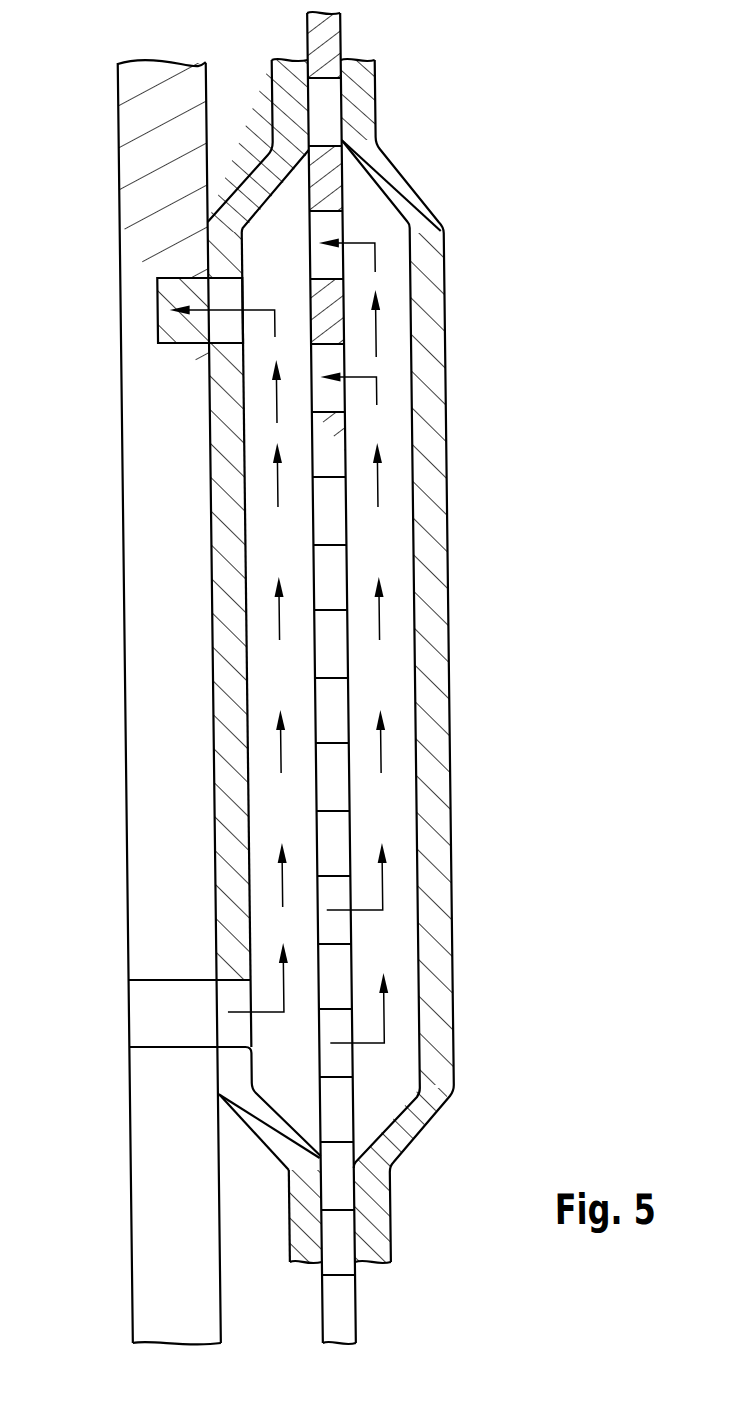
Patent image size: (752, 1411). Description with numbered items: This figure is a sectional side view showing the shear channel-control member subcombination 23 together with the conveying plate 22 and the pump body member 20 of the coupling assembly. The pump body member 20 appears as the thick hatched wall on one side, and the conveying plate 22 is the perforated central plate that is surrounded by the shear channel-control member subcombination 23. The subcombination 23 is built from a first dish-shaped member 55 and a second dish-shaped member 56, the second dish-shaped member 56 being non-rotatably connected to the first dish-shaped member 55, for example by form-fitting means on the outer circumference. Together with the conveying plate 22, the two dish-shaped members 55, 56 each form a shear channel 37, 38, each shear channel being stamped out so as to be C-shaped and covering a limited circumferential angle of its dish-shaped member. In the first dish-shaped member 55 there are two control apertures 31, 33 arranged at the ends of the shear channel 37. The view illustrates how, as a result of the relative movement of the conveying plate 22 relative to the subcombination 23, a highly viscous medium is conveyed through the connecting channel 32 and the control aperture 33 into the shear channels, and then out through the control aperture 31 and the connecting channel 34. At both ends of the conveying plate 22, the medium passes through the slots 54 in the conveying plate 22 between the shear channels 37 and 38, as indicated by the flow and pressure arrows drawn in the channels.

The pump body member 20 is at (155, 633).
The conveying plate 22 is at (330, 575).
The shear channel-control member subcombination 23 is at (496, 686).
The control aperture 31 is at (225, 291).
The connecting channel 32 is at (146, 1020).
The control aperture 33 is at (226, 1037).
The connecting channel 34 is at (163, 324).
The shear channel 37 is at (259, 928).
The shear channel 38 is at (376, 955).
The slots 54 is at (328, 787).
The first dish-shaped member 55 is at (253, 183).
The second dish-shaped member 56 is at (422, 268).